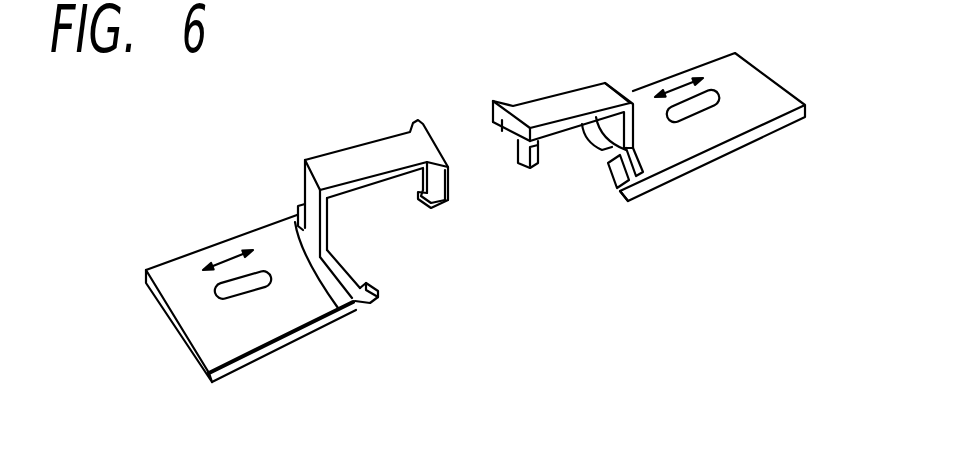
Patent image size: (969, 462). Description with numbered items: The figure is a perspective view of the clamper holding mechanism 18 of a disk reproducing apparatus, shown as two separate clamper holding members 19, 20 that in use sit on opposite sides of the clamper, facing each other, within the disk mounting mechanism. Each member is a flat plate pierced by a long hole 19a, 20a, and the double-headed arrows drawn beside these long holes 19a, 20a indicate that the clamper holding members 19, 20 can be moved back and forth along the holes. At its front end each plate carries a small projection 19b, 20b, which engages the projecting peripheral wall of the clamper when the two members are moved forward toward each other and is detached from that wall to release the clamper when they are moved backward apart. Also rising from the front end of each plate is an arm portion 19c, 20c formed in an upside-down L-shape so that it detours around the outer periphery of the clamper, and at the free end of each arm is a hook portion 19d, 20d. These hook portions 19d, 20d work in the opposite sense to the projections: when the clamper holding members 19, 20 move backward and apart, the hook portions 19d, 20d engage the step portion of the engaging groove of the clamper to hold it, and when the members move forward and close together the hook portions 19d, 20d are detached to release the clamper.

The clamper holding mechanism 18 is at (452, 105).
The clamper holding member 19 is at (297, 333).
The long hole 19a is at (227, 297).
The projection 19b is at (380, 296).
The arm portion 19c is at (304, 158).
The hook portion 19d is at (432, 207).
The clamper holding member 20 is at (730, 156).
The long hole 20a is at (715, 98).
The projection 20b is at (620, 202).
The arm portion 20c is at (600, 83).
The hook portion 20d is at (538, 165).